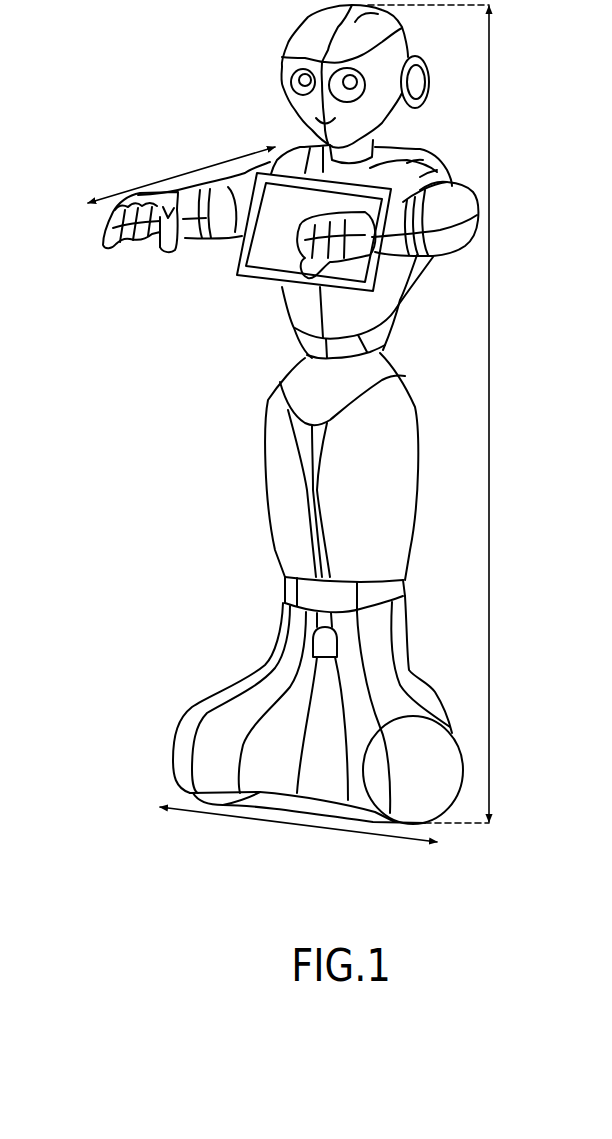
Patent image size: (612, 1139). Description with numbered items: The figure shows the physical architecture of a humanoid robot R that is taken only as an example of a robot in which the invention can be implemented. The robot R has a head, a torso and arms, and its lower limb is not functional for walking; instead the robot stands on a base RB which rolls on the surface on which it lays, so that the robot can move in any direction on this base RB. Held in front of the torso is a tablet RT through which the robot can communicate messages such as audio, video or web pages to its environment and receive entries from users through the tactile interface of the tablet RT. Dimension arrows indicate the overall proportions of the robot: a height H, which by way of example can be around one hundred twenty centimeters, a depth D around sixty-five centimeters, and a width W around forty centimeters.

The humanoid robot R is at (236, 491).
The tablet RT is at (236, 278).
The base RB is at (172, 742).
The height H is at (490, 387).
The width W is at (273, 822).
The depth D is at (187, 177).